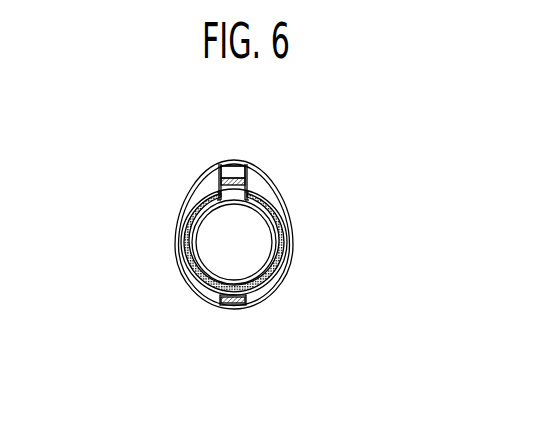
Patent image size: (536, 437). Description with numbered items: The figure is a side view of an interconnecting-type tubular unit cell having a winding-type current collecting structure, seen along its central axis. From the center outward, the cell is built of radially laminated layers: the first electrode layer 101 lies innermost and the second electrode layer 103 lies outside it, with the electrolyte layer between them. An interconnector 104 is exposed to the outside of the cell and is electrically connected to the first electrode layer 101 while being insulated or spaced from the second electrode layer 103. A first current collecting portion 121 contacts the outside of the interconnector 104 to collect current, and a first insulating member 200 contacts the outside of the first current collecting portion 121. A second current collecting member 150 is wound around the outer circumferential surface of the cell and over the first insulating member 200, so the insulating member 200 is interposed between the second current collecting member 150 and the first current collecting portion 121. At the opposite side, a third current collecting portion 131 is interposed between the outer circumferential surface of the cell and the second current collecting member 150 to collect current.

The second current collecting member 150 is at (251, 165).
The first insulating member 200 is at (221, 171).
The interconnector 104 is at (220, 187).
The first current collecting portion 121 is at (247, 180).
The second electrode layer 103 is at (279, 222).
The first electrode layer 101 is at (276, 259).
The third current collecting portion 131 is at (256, 302).